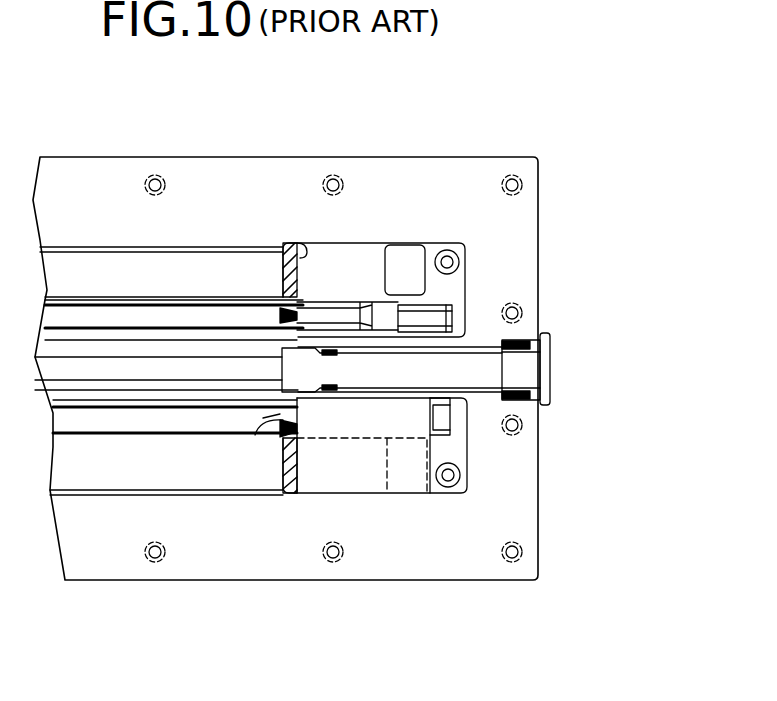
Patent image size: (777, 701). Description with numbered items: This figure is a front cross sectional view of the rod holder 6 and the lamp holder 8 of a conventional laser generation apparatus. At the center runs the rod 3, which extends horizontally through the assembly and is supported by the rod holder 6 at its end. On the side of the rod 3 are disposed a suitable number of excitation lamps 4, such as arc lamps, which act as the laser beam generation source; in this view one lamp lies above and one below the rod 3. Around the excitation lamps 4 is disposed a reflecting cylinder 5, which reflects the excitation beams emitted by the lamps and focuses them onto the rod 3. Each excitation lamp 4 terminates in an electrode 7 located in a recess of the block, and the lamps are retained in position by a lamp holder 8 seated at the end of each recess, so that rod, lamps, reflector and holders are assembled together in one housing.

The rod 3 is at (118, 357).
The excitation lamps 4 is at (169, 300).
The reflecting cylinder 5 is at (236, 253).
The rod holder 6 is at (551, 344).
The electrode 7 is at (291, 300).
The lamp holder 8 is at (445, 302).